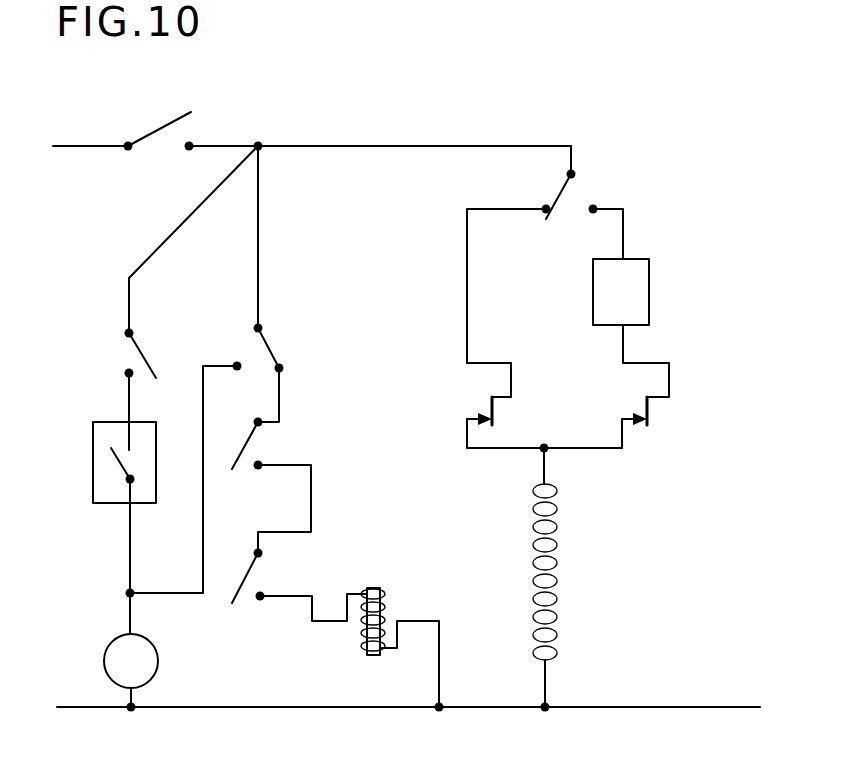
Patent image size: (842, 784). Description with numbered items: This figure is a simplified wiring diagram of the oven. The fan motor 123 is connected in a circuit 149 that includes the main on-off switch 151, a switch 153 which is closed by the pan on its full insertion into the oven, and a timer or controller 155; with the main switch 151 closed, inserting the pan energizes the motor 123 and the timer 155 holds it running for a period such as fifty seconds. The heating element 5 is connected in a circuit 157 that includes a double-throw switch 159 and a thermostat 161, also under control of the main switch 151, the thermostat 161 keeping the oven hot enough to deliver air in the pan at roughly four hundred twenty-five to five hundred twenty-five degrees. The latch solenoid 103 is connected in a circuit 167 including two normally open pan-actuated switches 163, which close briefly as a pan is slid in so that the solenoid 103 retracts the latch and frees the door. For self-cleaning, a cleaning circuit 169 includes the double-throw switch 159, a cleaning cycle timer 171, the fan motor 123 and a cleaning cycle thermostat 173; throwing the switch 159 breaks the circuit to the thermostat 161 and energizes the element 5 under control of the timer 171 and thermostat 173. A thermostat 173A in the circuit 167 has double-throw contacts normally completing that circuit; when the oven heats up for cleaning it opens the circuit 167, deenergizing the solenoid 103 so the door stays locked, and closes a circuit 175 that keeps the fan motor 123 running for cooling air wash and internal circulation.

The heating element 5 is at (555, 612).
The latch solenoid 103 is at (373, 588).
The fan motor 123 is at (158, 668).
The circuit 149 is at (177, 230).
The main on-off switch 151 is at (167, 90).
The switch 153 is at (145, 356).
The timer or controller 155 is at (93, 480).
The circuit 157 is at (356, 145).
The double-throw switch 159 is at (560, 195).
The thermostat 161 is at (497, 404).
The pan-actuated switches 163 is at (246, 438).
The circuit 167 is at (440, 645).
The cleaning circuit 169 is at (623, 237).
The cleaning cycle timer 171 is at (649, 296).
The cleaning cycle thermostat 173 is at (652, 404).
The thermostat 173A is at (270, 348).
The circuit 175 is at (203, 514).